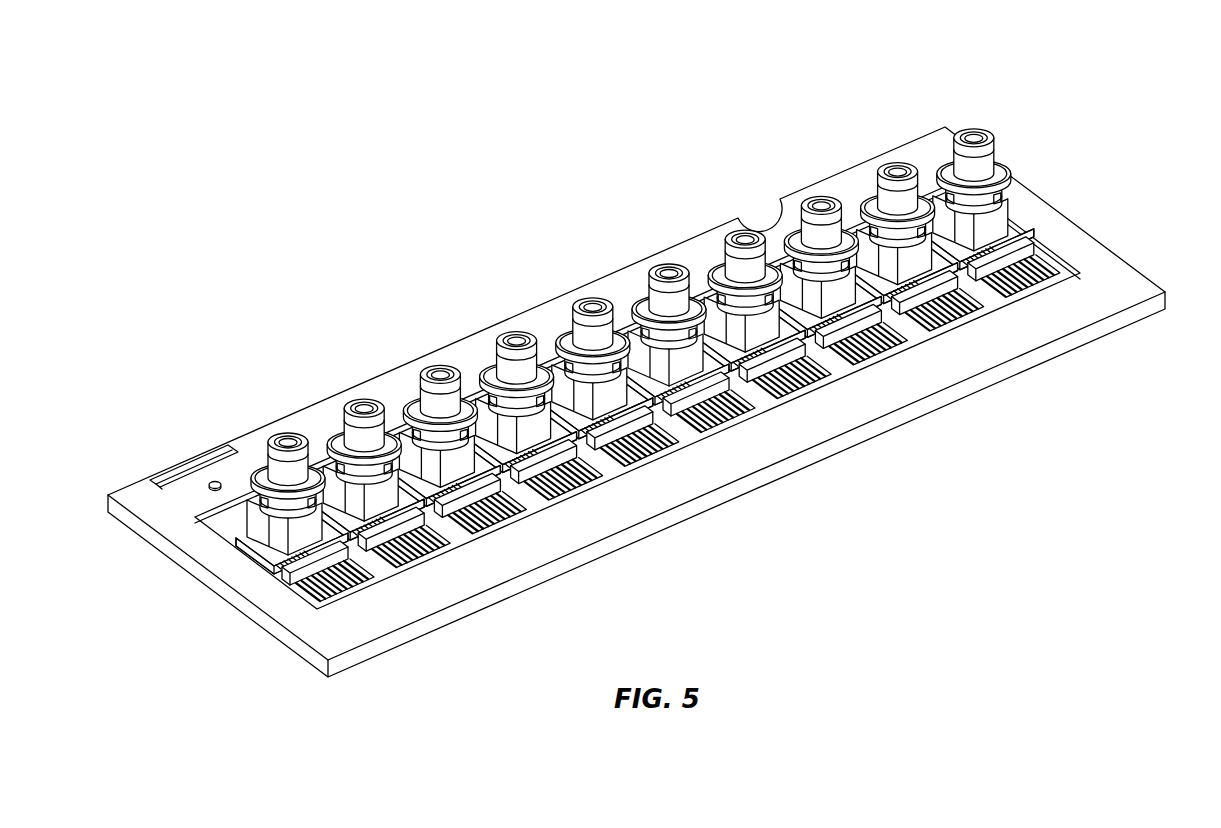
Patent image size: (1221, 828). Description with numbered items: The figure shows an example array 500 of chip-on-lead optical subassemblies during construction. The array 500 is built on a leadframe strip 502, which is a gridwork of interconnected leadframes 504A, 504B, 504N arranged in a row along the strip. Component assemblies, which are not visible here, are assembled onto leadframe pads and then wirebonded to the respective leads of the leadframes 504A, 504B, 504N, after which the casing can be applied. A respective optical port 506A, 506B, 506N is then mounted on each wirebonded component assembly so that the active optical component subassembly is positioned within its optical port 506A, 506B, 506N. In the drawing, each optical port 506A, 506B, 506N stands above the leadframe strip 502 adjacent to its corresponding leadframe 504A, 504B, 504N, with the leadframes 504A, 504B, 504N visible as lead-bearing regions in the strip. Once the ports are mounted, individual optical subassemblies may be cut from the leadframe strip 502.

The array 500 is at (1125, 91).
The leadframe strip 502 is at (316, 644).
The leadframe 504A is at (358, 568).
The leadframe 504B is at (436, 533).
The leadframe 504N is at (994, 291).
The optical port 506A is at (272, 460).
The optical port 506B is at (343, 425).
The optical port 506N is at (962, 162).